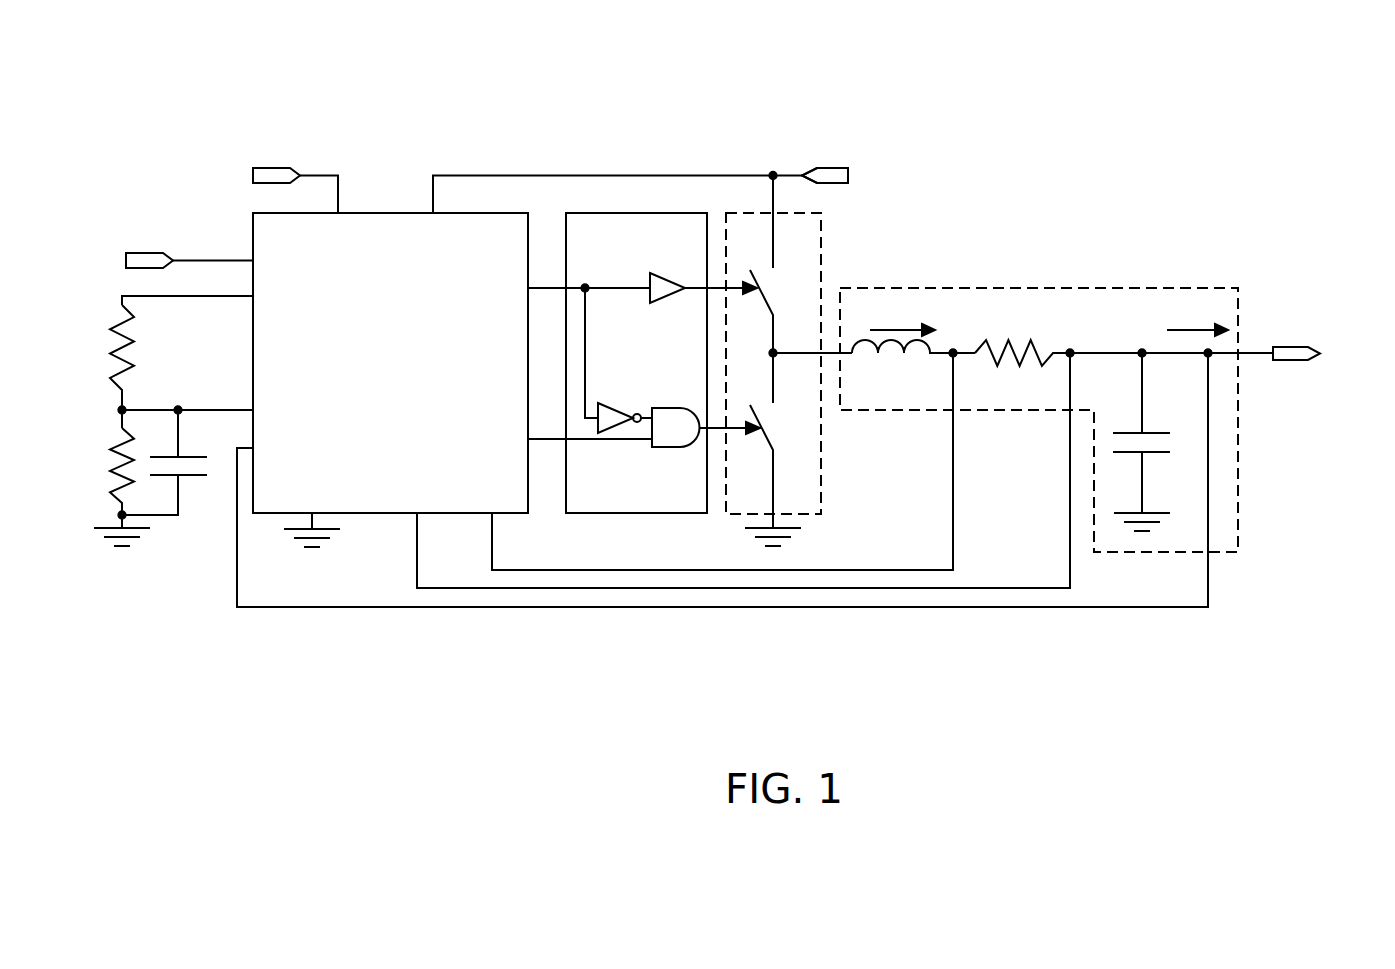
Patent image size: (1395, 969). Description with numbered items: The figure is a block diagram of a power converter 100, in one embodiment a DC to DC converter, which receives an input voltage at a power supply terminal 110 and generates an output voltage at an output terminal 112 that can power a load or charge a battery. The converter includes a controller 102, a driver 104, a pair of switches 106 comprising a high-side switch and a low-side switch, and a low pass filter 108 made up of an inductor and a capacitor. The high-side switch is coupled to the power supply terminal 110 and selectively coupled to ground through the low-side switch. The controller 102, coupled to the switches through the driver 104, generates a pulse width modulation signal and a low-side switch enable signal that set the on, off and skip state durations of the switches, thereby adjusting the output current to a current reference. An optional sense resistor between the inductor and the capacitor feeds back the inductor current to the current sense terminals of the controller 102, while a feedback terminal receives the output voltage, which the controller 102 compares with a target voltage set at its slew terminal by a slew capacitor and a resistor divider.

The power converter 100 is at (207, 135).
The controller 102 is at (484, 213).
The driver 104 is at (632, 213).
The pair of switches 106 is at (822, 252).
The low pass filter 108 is at (1097, 288).
The power supply terminal 110 is at (812, 168).
The output terminal 112 is at (1290, 347).